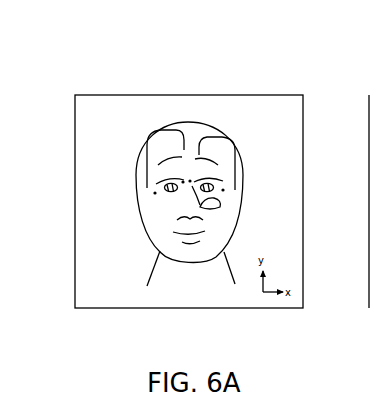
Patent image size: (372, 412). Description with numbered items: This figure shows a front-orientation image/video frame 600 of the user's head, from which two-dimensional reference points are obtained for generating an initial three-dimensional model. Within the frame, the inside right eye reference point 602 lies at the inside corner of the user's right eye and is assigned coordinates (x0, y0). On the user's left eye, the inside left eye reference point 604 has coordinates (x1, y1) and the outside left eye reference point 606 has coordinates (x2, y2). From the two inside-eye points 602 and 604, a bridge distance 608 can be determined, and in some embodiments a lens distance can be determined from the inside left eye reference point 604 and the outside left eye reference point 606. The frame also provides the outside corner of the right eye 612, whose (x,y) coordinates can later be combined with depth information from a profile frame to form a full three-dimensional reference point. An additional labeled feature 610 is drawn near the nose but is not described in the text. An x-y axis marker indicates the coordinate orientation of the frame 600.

The image/video frame 600 is at (200, 304).
The inside right eye reference point 602 is at (182, 180).
The inside left eye reference point 604 is at (190, 180).
The outside left eye reference point 606 is at (225, 190).
The bridge distance 608 is at (171, 157).
The nose 610 is at (206, 198).
The outside corner of the right eye 612 is at (153, 193).